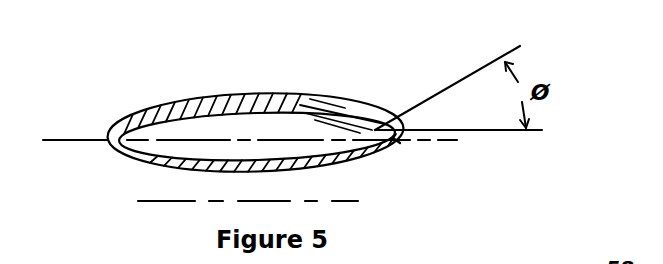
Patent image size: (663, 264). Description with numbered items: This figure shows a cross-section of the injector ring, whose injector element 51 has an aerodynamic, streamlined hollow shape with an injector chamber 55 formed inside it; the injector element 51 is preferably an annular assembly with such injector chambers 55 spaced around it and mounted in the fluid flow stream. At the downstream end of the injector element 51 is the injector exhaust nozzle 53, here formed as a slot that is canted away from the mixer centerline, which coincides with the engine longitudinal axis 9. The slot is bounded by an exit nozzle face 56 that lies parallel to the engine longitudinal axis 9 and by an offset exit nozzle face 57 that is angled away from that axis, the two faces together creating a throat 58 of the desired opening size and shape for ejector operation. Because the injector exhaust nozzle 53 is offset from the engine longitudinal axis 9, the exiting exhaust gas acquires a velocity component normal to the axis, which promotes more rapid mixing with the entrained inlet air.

The engine longitudinal axis 9 is at (167, 202).
The injector element 51 is at (152, 110).
The injector exhaust nozzle 53 is at (413, 140).
The injector chamber 55 is at (228, 130).
The exit nozzle face 56 is at (388, 140).
The offset exit nozzle face 57 is at (390, 115).
The throat 58 is at (365, 135).